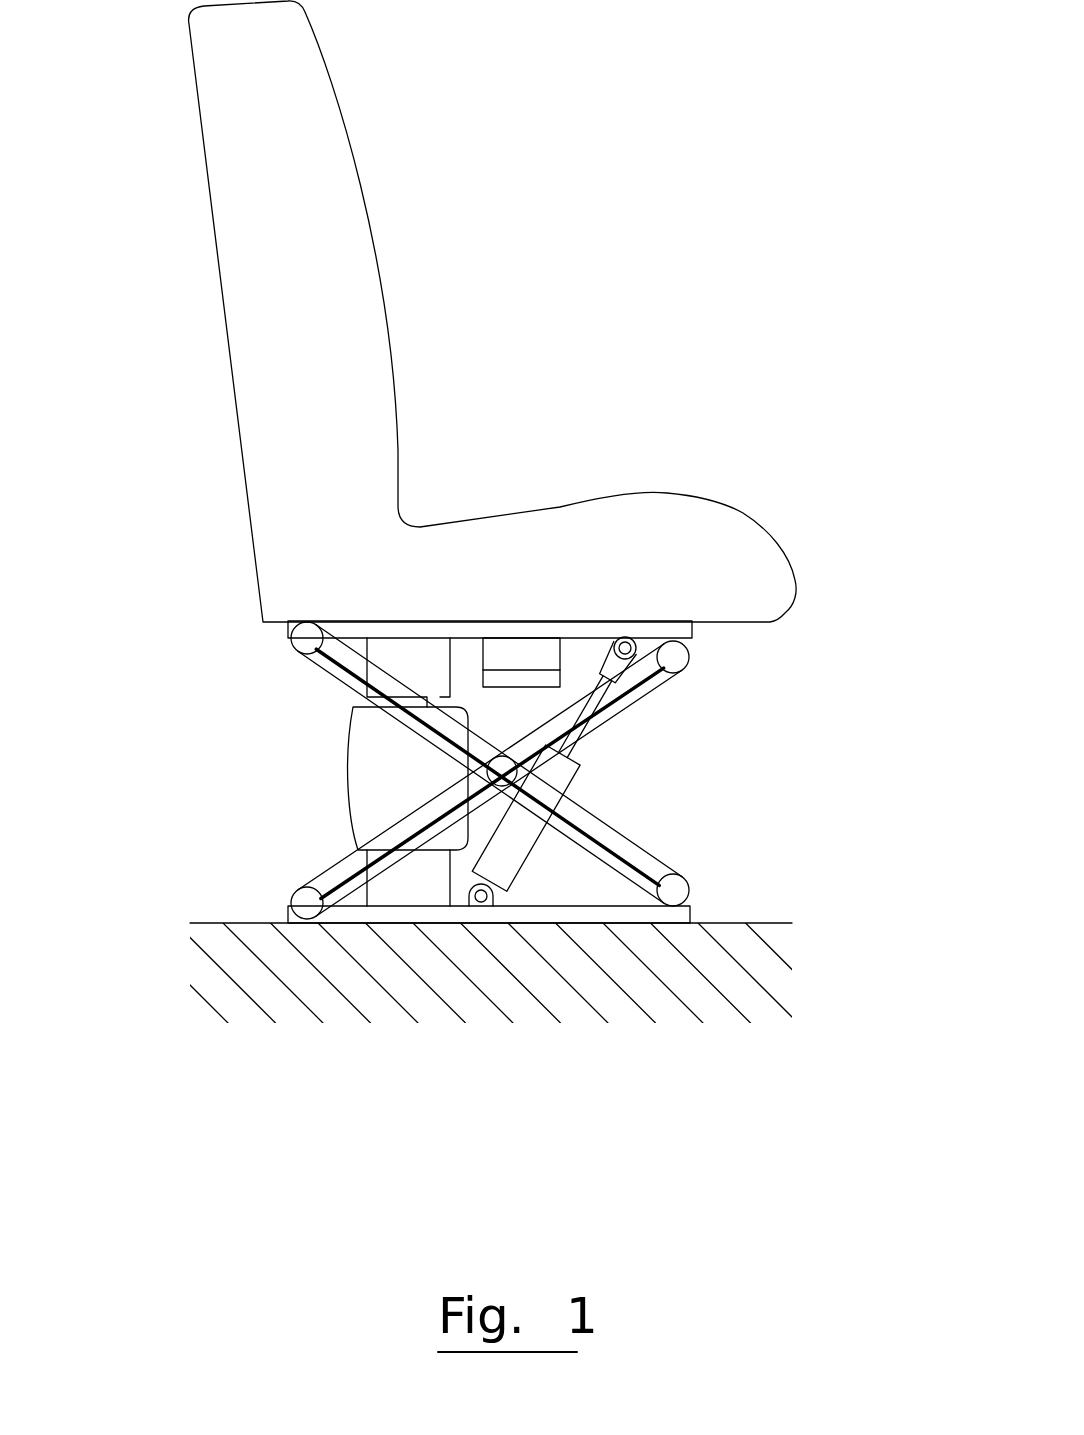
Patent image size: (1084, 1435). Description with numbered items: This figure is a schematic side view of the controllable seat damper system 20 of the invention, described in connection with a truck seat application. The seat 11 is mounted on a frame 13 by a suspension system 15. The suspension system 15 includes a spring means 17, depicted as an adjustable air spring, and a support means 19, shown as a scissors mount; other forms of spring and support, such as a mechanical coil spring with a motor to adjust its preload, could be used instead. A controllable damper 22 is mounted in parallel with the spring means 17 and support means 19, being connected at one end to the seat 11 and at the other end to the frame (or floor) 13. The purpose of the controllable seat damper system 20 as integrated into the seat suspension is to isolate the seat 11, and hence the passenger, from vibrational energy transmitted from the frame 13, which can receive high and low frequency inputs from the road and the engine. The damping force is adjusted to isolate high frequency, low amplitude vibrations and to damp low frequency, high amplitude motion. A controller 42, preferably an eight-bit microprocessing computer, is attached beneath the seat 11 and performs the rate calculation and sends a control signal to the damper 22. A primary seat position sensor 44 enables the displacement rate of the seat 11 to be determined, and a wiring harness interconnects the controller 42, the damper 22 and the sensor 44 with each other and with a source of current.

The seat 11 is at (530, 311).
The frame 13 is at (530, 947).
The suspension system 15 is at (503, 639).
The spring means 17 is at (302, 778).
The support means 19 is at (555, 780).
The controllable seat damper system 20 is at (615, 771).
The controllable damper 22 is at (683, 771).
The controller 42 is at (576, 521).
The primary seat position sensor 44 is at (336, 815).